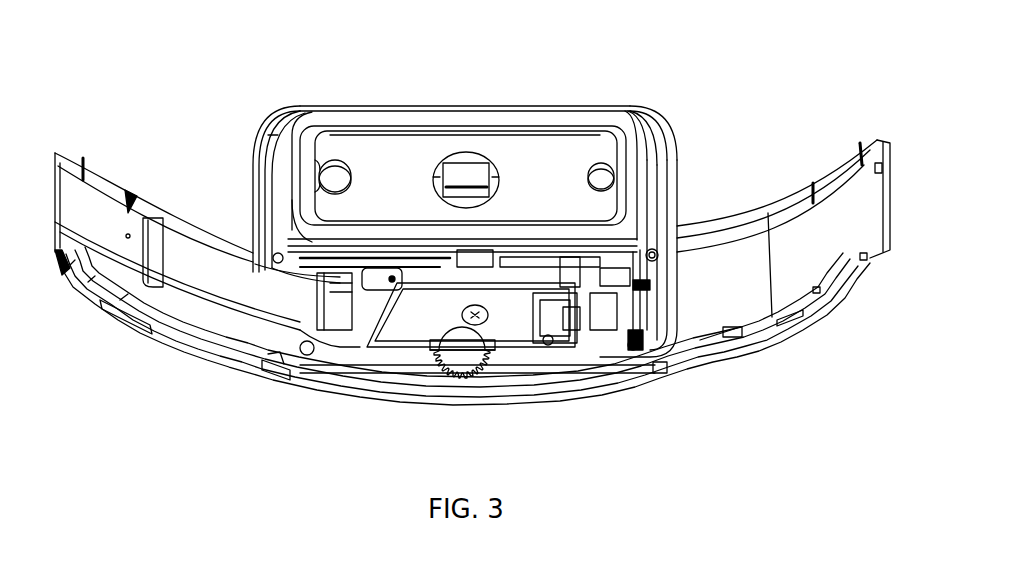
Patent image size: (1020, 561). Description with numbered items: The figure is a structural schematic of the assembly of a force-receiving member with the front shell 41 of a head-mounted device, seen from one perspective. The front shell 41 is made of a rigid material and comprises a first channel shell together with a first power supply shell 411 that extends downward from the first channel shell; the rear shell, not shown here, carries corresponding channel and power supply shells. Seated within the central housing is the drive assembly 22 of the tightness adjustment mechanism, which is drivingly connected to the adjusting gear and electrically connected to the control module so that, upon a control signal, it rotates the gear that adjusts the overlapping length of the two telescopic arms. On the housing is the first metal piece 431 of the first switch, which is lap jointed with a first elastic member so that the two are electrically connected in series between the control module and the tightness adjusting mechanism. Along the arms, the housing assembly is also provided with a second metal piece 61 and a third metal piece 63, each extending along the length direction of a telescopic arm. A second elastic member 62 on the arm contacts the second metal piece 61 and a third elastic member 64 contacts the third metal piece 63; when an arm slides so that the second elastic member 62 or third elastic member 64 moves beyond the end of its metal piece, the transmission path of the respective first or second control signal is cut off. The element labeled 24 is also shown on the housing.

The drive assembly 22 is at (503, 353).
The housing 24 is at (624, 233).
The front shell 41 is at (130, 205).
The first power supply shell 411 is at (268, 141).
The first metal piece 431 is at (463, 165).
The second metal piece 61 is at (237, 348).
The second elastic member 62 is at (275, 374).
The third metal piece 63 is at (793, 337).
The third elastic member 64 is at (740, 332).